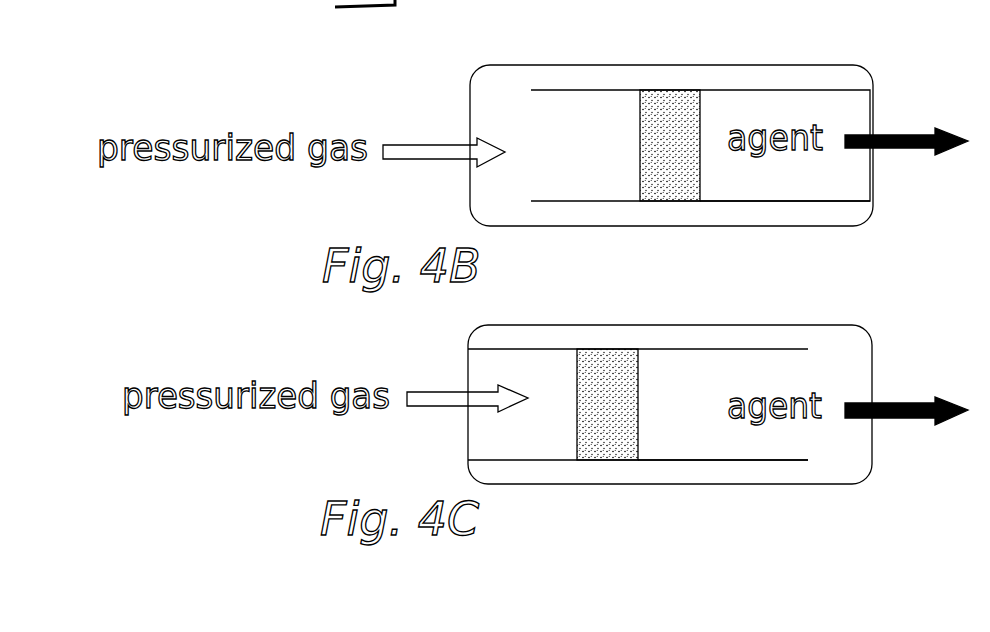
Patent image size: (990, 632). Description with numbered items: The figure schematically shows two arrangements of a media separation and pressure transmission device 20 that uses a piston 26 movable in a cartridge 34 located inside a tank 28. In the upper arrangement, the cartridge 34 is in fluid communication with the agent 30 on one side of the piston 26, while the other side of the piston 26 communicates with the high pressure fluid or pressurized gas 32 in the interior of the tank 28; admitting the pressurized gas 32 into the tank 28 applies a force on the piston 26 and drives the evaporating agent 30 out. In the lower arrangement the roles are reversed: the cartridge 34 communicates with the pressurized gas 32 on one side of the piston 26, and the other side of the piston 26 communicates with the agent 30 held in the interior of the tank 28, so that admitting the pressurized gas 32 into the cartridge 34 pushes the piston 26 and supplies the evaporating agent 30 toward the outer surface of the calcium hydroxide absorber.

In FIG. 4B, the media separation and pressure transmission device 20 is at (536, 62).
In FIG. 4C, the media separation and pressure transmission device 20 is at (559, 316).
In FIG. 4B, the piston 26 is at (672, 117).
In FIG. 4C, the piston 26 is at (598, 367).
In FIG. 4B, the tank 28 is at (740, 65).
In FIG. 4C, the tank 28 is at (697, 324).
In FIG. 4B, the agent 30 is at (910, 135).
In FIG. 4C, the agent 30 is at (897, 403).
In FIG. 4B, the pressurized gas 32 is at (423, 148).
In FIG. 4C, the pressurized gas 32 is at (420, 398).
In FIG. 4B, the cartridge 34 is at (747, 200).
In FIG. 4C, the cartridge 34 is at (645, 460).